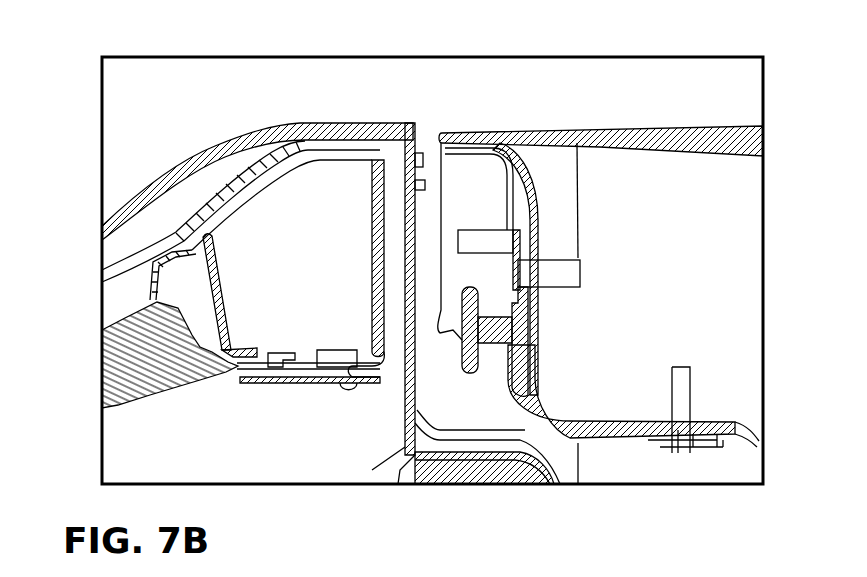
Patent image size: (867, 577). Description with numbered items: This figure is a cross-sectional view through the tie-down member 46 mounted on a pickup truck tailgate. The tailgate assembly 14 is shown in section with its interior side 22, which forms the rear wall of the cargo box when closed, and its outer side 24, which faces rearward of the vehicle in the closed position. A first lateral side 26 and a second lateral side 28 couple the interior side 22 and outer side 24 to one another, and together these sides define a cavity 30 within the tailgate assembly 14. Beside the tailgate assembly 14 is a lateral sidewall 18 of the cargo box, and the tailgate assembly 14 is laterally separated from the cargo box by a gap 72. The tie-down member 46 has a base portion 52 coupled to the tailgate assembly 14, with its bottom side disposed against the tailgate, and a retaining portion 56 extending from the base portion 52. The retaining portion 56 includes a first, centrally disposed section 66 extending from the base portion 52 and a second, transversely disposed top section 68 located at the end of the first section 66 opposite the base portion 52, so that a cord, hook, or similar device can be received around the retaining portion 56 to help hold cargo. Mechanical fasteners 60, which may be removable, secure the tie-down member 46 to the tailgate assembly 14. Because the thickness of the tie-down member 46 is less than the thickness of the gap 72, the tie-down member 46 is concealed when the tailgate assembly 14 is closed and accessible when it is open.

The tailgate assembly 14 is at (669, 72).
The lateral sidewall 18 is at (167, 424).
The interior side 22 is at (757, 440).
The outer side 24 is at (613, 128).
The first lateral side 26 is at (175, 165).
The second lateral side 28 is at (542, 383).
The cavity 30 is at (708, 285).
The tie-down member 46 is at (537, 303).
The base portion 52 is at (523, 424).
The retaining portion 56 is at (417, 130).
The mechanical fasteners 60 is at (472, 245).
The first section 66 is at (482, 333).
The second section 68 is at (457, 312).
The gap 72 is at (493, 317).